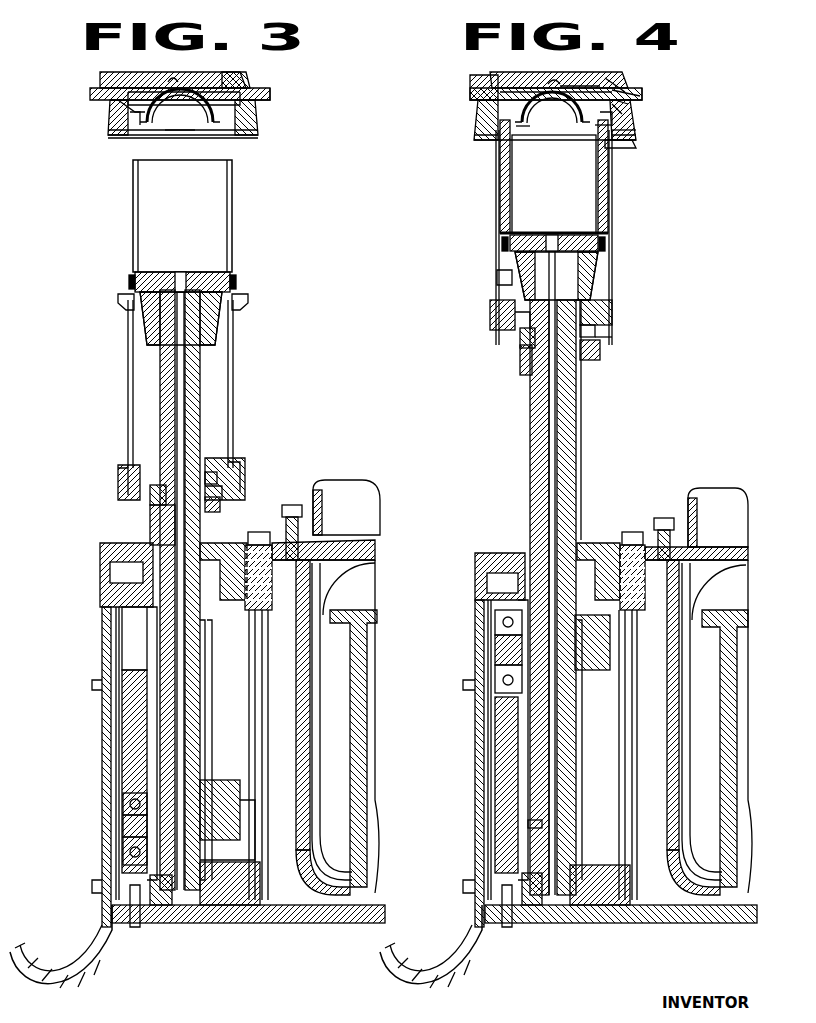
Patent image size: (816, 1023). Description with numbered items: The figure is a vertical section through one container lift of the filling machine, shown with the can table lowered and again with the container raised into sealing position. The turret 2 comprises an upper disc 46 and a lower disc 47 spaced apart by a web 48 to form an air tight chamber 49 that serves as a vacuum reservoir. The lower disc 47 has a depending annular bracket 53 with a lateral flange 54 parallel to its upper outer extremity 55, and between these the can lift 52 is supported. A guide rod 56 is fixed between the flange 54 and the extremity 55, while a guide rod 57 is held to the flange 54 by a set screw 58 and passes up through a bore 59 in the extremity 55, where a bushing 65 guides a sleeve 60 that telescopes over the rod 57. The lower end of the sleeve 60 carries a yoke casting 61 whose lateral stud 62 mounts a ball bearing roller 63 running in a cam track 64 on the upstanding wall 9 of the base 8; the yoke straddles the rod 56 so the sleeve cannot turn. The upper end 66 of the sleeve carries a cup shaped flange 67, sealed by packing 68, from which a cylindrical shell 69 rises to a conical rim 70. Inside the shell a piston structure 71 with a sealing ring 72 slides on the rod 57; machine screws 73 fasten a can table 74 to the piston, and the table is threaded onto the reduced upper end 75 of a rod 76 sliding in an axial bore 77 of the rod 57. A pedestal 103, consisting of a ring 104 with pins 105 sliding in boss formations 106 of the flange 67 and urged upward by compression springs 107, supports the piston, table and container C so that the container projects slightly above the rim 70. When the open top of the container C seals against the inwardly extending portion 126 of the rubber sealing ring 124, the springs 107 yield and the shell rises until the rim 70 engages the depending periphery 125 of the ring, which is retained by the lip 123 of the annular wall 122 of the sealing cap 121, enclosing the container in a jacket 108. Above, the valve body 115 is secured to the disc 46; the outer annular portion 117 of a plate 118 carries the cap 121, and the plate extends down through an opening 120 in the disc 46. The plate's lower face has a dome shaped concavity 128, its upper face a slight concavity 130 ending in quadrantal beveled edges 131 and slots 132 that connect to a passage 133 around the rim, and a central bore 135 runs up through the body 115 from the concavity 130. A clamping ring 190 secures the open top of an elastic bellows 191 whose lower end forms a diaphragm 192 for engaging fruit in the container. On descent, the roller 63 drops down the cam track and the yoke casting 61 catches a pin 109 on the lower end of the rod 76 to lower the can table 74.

In FIG. 3, the turret 2 is at (330, 494).
In FIG. 4, the turret 2 is at (690, 494).
In FIG. 3, the base 8 is at (295, 925).
In FIG. 4, the base 8 is at (635, 925).
In FIG. 3, the upstanding wall 9 is at (110, 722).
In FIG. 4, the upstanding wall 9 is at (486, 690).
In FIG. 3, the upper disc 46 is at (258, 97).
In FIG. 4, the upper disc 46 is at (642, 96).
In FIG. 3, the lower disc 47 is at (378, 560).
In FIG. 4, the lower disc 47 is at (750, 560).
In FIG. 3, the web 48 is at (300, 516).
In FIG. 4, the web 48 is at (672, 518).
In FIG. 3, the air tight chamber 49 is at (362, 504).
In FIG. 4, the air tight chamber 49 is at (720, 500).
In FIG. 3, the can lift 52 is at (150, 705).
In FIG. 4, the can lift 52 is at (522, 790).
In FIG. 3, the depending annular bracket 53 is at (306, 775).
In FIG. 4, the depending annular bracket 53 is at (680, 765).
In FIG. 3, the lateral flange 54 is at (230, 885).
In FIG. 4, the lateral flange 54 is at (600, 880).
In FIG. 3, the upper outer extremity 55 is at (112, 548).
In FIG. 4, the upper outer extremity 55 is at (482, 548).
In FIG. 3, the guide rod 56 is at (255, 680).
In FIG. 4, the guide rod 56 is at (625, 760).
In FIG. 3, the guide rod 57 is at (200, 666).
In FIG. 4, the guide rod 57 is at (565, 720).
In FIG. 3, the set screw 58 is at (162, 905).
In FIG. 4, the set screw 58 is at (530, 905).
In FIG. 3, the bore 59 is at (236, 606).
In FIG. 4, the bore 59 is at (602, 604).
In FIG. 3, the sleeve 60 is at (200, 739).
In FIG. 4, the sleeve 60 is at (582, 478).
In FIG. 3, the yoke casting 61 is at (222, 800).
In FIG. 4, the yoke casting 61 is at (605, 647).
In FIG. 3, the lateral stud 62 is at (125, 828).
In FIG. 4, the lateral stud 62 is at (495, 668).
In FIG. 3, the ball bearing roller 63 is at (123, 797).
In FIG. 4, the ball bearing roller 63 is at (495, 640).
In FIG. 3, the cam track 64 is at (128, 880).
In FIG. 4, the cam track 64 is at (495, 720).
In FIG. 3, the bushing 65 is at (110, 572).
In FIG. 4, the bushing 65 is at (580, 540).
In FIG. 3, the upper end 66 is at (152, 515).
In FIG. 4, the upper end 66 is at (530, 360).
In FIG. 3, the cup shaped flange 67 is at (226, 478).
In FIG. 4, the cup shaped flange 67 is at (510, 318).
In FIG. 3, the packing 68 is at (150, 492).
In FIG. 4, the packing 68 is at (522, 338).
In FIG. 3, the cylindrical shell 69 is at (234, 397).
In FIG. 4, the cylindrical shell 69 is at (612, 194).
In FIG. 3, the conical rim 70 is at (250, 300).
In FIG. 4, the conical rim 70 is at (612, 147).
In FIG. 3, the piston structure 71 is at (222, 333).
In FIG. 4, the piston structure 71 is at (503, 302).
In FIG. 3, the sealing ring 72 is at (120, 305).
In FIG. 4, the sealing ring 72 is at (497, 276).
In FIG. 3, the machine screws 73 is at (129, 283).
In FIG. 4, the machine screws 73 is at (503, 248).
In FIG. 3, the can table 74 is at (232, 278).
In FIG. 4, the can table 74 is at (607, 240).
In FIG. 3, the reduced upper end 75 is at (180, 272).
In FIG. 4, the reduced upper end 75 is at (553, 233).
In FIG. 3, the rod 76 is at (196, 362).
In FIG. 4, the rod 76 is at (560, 393).
In FIG. 3, the axial bore 77 is at (162, 392).
In FIG. 4, the axial bore 77 is at (565, 420).
In FIG. 3, the pedestal 103 is at (120, 470).
In FIG. 4, the pedestal 103 is at (500, 330).
In FIG. 3, the ring 104 is at (222, 470).
In FIG. 4, the ring 104 is at (614, 312).
In FIG. 3, the pins 105 is at (220, 506).
In FIG. 4, the pins 105 is at (590, 360).
In FIG. 3, the boss formations 106 is at (225, 498).
In FIG. 4, the boss formations 106 is at (605, 340).
In FIG. 3, the compression spring 107 is at (222, 490).
In FIG. 4, the compression spring 107 is at (600, 330).
In FIG. 4, the jacket 108 is at (500, 190).
In FIG. 3, the pin 109 is at (150, 905).
In FIG. 4, the pin 109 is at (528, 824).
In FIG. 3, the body 115 is at (102, 78).
In FIG. 4, the body 115 is at (628, 82).
In FIG. 3, the outer annular portion 117 is at (240, 84).
In FIG. 4, the outer annular portion 117 is at (502, 82).
In FIG. 3, the plate 118 is at (212, 80).
In FIG. 4, the plate 118 is at (522, 82).
In FIG. 3, the opening 120 is at (270, 90).
In FIG. 4, the opening 120 is at (470, 91).
In FIG. 3, the sealing cap 121 is at (262, 127).
In FIG. 4, the sealing cap 121 is at (636, 133).
In FIG. 4, the annular wall 122 is at (620, 125).
In FIG. 4, the inwardly extending lip 123 is at (634, 140).
In FIG. 3, the rubber sealing ring 124 is at (110, 122).
In FIG. 4, the rubber sealing ring 124 is at (478, 120).
In FIG. 3, the depending periphery 125 is at (110, 136).
In FIG. 4, the depending periphery 125 is at (478, 136).
In FIG. 3, the inwardly extending annular portion 126 is at (118, 112).
In FIG. 4, the inwardly extending annular portion 126 is at (625, 116).
In FIG. 4, the dome shaped concavity 128 is at (604, 80).
In FIG. 4, the slight concavity 130 is at (584, 84).
In FIG. 4, the quadrantal beveled edges 131 is at (626, 78).
In FIG. 4, the slots 132 is at (630, 100).
In FIG. 3, the passage 133 is at (125, 103).
In FIG. 4, the passage 133 is at (628, 108).
In FIG. 3, the central bore 135 is at (175, 80).
In FIG. 4, the central bore 135 is at (558, 82).
In FIG. 3, the clamping ring 190 is at (215, 108).
In FIG. 4, the clamping ring 190 is at (520, 105).
In FIG. 3, the bellows 191 is at (195, 110).
In FIG. 4, the bellows 191 is at (516, 126).
In FIG. 3, the diaphragm 192 is at (162, 112).
In FIG. 4, the diaphragm 192 is at (557, 108).
In FIG. 3, the container C is at (232, 208).
In FIG. 4, the container C is at (600, 178).